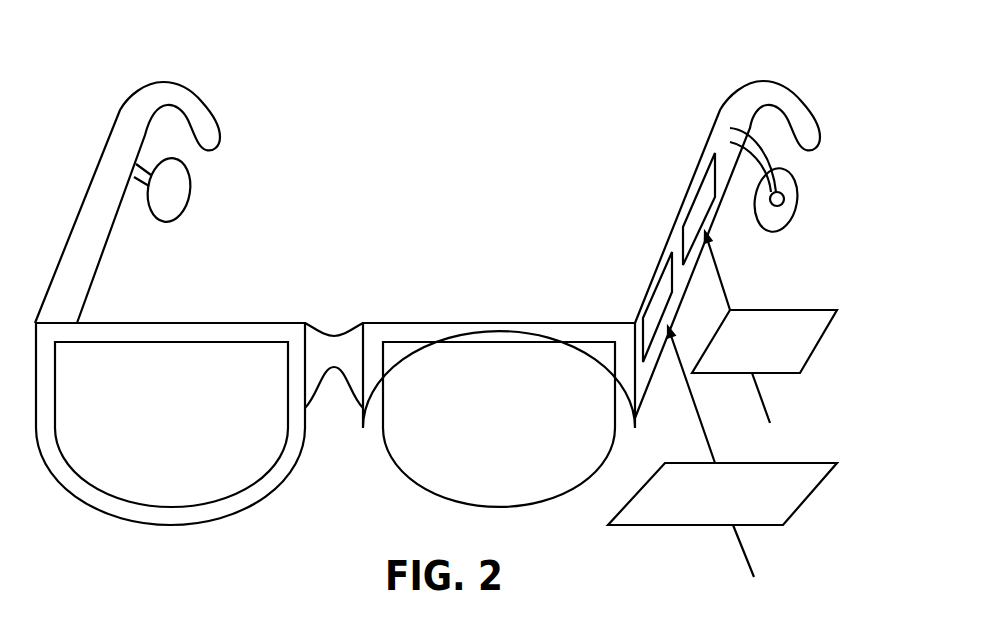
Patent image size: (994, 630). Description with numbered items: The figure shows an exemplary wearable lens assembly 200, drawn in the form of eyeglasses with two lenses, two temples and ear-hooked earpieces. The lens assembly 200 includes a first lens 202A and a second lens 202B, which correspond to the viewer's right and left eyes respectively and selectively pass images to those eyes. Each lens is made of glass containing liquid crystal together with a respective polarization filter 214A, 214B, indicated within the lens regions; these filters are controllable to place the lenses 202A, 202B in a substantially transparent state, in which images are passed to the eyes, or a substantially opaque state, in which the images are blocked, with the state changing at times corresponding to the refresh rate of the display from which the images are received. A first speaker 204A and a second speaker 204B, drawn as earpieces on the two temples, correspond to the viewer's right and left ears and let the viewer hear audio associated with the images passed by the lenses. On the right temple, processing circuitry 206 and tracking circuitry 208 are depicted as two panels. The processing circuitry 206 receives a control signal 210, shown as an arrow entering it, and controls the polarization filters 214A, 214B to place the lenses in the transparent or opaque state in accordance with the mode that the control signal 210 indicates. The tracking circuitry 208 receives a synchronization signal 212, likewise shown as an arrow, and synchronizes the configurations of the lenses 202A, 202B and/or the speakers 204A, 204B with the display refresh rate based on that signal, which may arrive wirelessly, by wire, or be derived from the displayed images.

The wearable lens assembly 200 is at (805, 68).
The first lens 202A is at (235, 342).
The second lens 202B is at (427, 342).
The first speaker 204A is at (167, 222).
The second speaker 204B is at (783, 232).
The processing circuitry 206 is at (700, 185).
The tracking circuitry 208 is at (660, 281).
The control signal 210 is at (777, 373).
The synchronization signal 212 is at (755, 525).
The polarization filter 214A is at (255, 458).
The polarization filter 214B is at (412, 457).